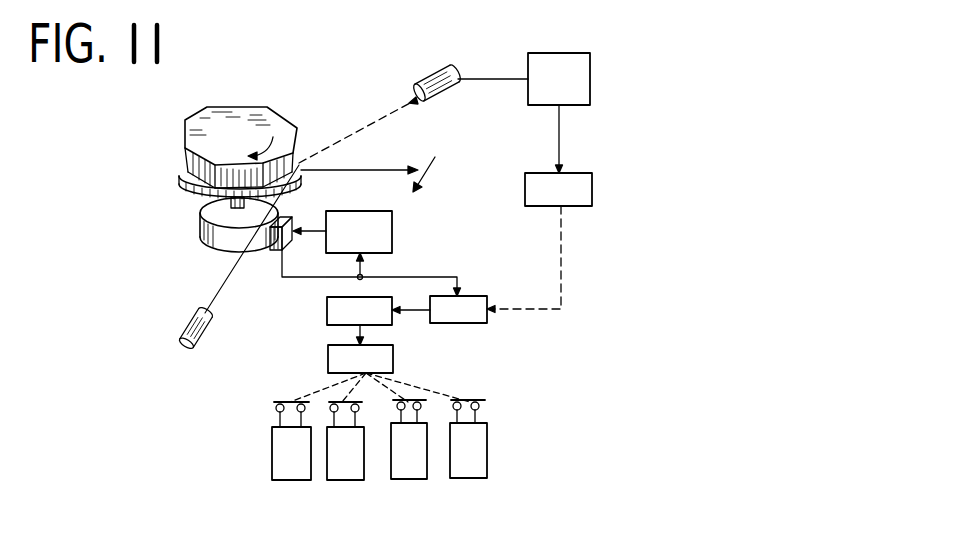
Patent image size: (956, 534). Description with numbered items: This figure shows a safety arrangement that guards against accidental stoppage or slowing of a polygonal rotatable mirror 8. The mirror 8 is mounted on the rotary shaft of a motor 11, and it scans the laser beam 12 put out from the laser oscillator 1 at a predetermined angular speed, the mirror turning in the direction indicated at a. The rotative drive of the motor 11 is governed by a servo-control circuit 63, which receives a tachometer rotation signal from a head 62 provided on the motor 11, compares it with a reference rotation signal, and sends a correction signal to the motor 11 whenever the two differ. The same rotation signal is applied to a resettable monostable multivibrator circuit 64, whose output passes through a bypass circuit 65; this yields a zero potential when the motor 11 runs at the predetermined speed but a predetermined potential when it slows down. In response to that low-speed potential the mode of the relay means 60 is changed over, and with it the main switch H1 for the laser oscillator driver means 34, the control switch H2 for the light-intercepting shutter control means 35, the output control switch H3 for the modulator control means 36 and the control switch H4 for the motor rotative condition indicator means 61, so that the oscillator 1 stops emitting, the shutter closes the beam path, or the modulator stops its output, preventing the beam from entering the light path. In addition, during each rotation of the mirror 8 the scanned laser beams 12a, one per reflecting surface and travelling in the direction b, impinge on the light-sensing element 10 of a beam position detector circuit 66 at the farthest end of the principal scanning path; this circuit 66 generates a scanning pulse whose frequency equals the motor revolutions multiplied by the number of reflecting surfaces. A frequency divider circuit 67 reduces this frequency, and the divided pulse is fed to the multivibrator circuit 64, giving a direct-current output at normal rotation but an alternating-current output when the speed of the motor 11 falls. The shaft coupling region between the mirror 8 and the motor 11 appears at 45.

The laser oscillator 1 is at (190, 325).
The polygonal rotatable mirror 8 is at (239, 112).
The light-sensing element 10 is at (431, 80).
The motor 11 is at (204, 236).
The laser beam 12 is at (215, 296).
The scanned laser beam 12a is at (385, 170).
The shaft 45 is at (231, 203).
The head 62 is at (275, 256).
The servo-control circuit 63 is at (378, 237).
The resettable monostable multivibrator circuit 64 is at (470, 302).
The bypass circuit 65 is at (327, 313).
The beam position detector circuit 66 is at (570, 72).
The frequency divider circuit 67 is at (580, 186).
The relay means 60 is at (394, 358).
The motor rotative condition indicator means 61 is at (291, 465).
The modulator control means 36 is at (345, 465).
The light-intercepting shutter control means 35 is at (405, 465).
The laser oscillator driver means 34 is at (468, 463).
The direction of rotation a is at (252, 151).
The direction of reflected beam b is at (419, 188).
The main switch H1 is at (470, 402).
The control switch H2 is at (415, 402).
The output control switch H3 is at (337, 402).
The control switch H4 is at (283, 402).